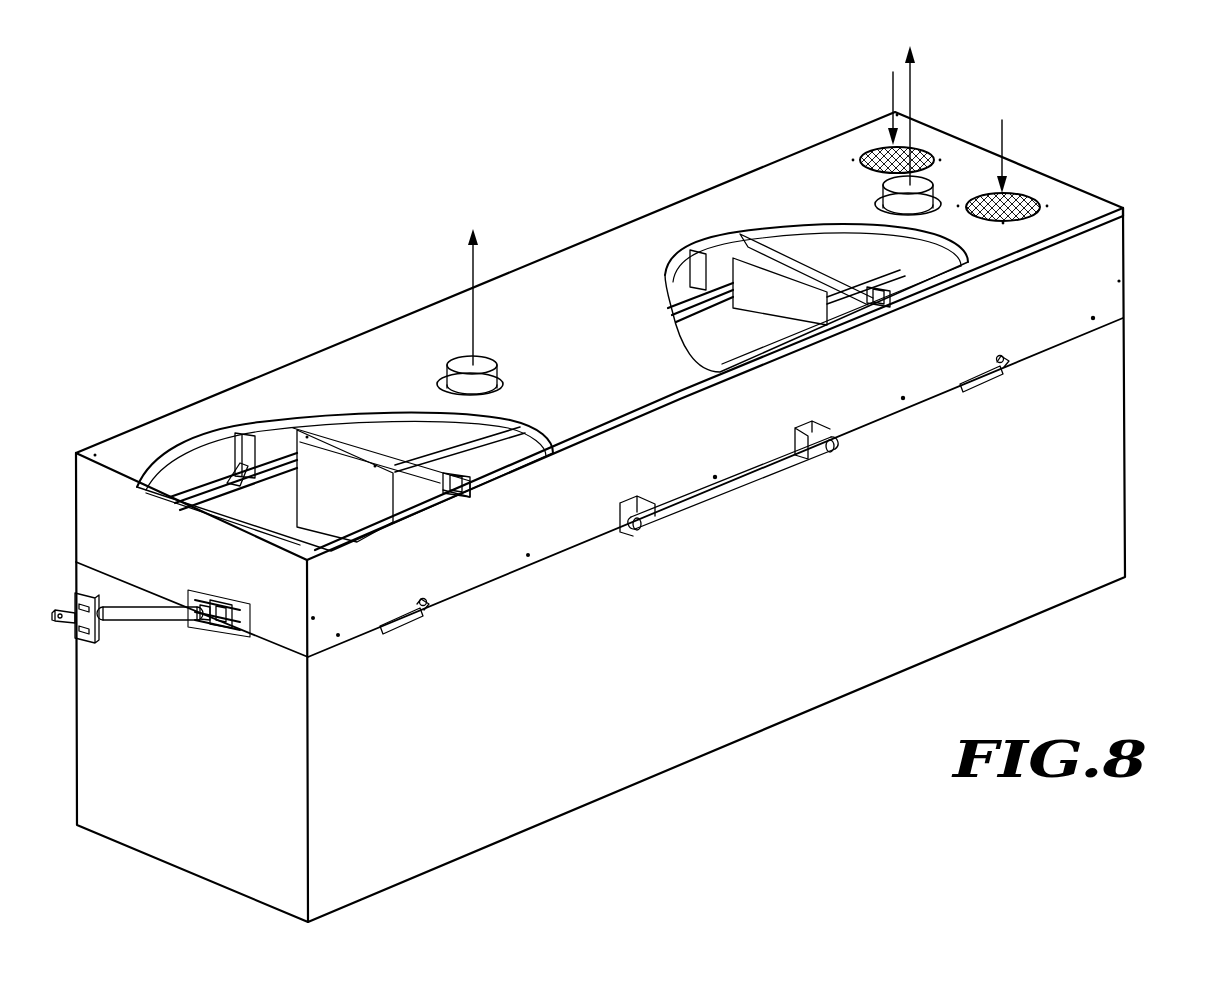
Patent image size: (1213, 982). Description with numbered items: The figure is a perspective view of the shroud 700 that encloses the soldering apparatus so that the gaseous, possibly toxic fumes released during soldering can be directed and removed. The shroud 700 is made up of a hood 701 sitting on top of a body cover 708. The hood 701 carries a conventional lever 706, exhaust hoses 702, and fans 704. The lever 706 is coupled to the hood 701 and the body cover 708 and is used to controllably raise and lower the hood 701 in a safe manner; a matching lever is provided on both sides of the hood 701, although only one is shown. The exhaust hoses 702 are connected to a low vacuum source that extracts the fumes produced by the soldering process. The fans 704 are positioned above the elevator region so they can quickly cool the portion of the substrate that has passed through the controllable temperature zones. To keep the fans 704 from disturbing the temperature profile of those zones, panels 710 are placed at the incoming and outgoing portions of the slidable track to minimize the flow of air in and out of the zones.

The shroud 700 is at (1198, 721).
The hood 701 is at (558, 287).
The exhaust hoses 702 is at (445, 377).
The fans 704 is at (921, 150).
The lever 706 is at (157, 617).
The body cover 708 is at (645, 735).
The panels 710 is at (328, 478).